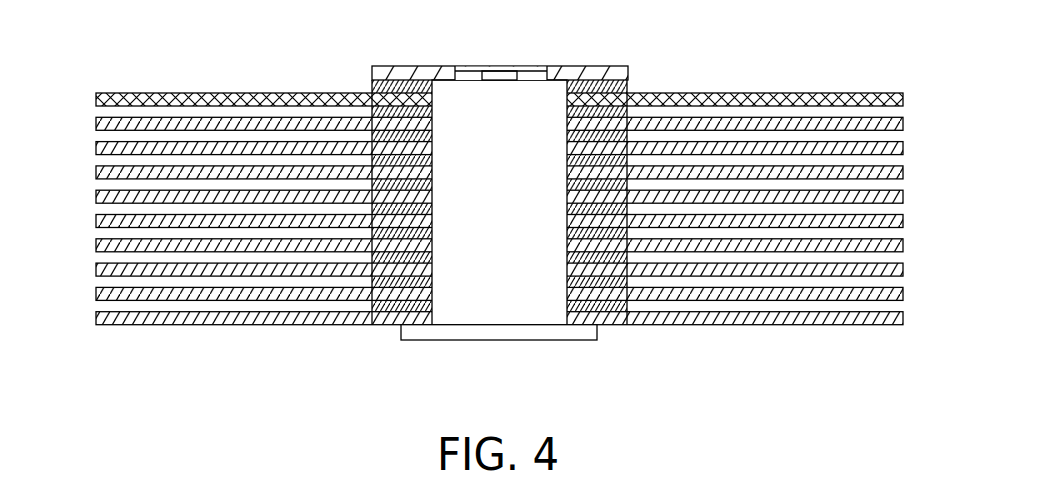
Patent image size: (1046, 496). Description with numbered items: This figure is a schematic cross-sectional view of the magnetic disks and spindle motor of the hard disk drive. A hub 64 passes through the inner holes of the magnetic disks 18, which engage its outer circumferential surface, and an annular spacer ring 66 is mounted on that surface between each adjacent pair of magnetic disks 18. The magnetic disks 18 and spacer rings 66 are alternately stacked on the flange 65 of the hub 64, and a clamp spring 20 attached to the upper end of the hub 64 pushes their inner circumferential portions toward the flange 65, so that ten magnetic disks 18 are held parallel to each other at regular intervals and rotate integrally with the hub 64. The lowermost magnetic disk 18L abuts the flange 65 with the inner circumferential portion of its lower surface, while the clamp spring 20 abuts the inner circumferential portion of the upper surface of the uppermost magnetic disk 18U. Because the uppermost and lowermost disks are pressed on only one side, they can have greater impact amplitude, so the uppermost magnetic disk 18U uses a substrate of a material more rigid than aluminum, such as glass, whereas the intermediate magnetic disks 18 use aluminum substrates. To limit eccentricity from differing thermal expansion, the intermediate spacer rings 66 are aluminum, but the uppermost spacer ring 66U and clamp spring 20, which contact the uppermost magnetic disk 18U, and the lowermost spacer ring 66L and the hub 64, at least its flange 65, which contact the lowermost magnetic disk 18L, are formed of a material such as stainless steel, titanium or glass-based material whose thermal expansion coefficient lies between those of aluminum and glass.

The magnetic disk 18 is at (785, 195).
The uppermost magnetic disk 18U is at (808, 92).
The lowermost magnetic disk 18L is at (753, 325).
The clamp spring 20 is at (590, 78).
The hub 64 is at (512, 312).
The flange 65 is at (451, 333).
The spacer ring 66 is at (372, 184).
The uppermost spacer ring 66U is at (370, 111).
The lowermost spacer ring 66L is at (380, 312).